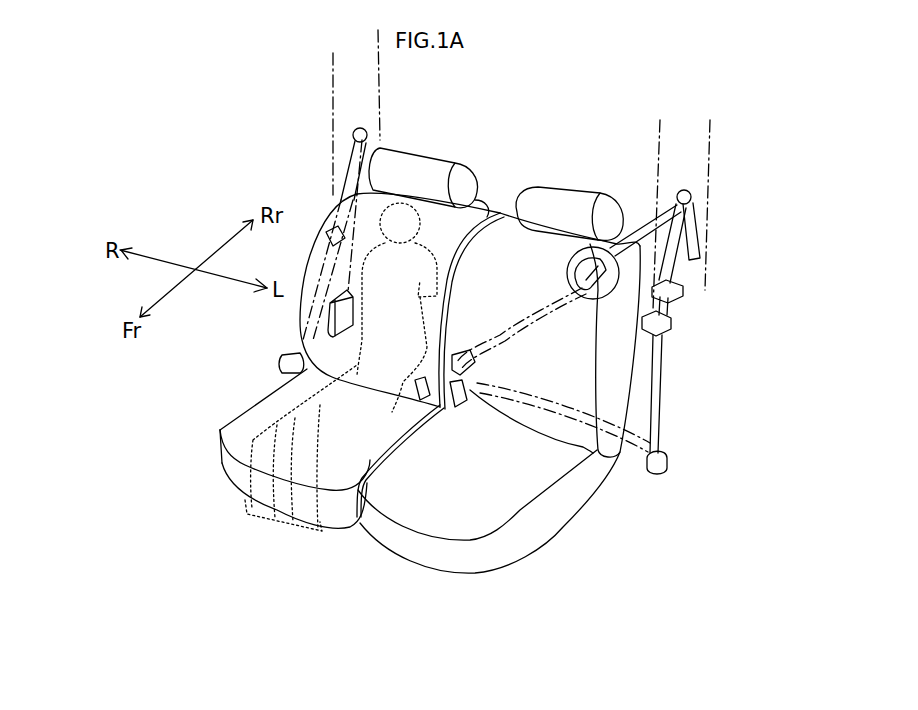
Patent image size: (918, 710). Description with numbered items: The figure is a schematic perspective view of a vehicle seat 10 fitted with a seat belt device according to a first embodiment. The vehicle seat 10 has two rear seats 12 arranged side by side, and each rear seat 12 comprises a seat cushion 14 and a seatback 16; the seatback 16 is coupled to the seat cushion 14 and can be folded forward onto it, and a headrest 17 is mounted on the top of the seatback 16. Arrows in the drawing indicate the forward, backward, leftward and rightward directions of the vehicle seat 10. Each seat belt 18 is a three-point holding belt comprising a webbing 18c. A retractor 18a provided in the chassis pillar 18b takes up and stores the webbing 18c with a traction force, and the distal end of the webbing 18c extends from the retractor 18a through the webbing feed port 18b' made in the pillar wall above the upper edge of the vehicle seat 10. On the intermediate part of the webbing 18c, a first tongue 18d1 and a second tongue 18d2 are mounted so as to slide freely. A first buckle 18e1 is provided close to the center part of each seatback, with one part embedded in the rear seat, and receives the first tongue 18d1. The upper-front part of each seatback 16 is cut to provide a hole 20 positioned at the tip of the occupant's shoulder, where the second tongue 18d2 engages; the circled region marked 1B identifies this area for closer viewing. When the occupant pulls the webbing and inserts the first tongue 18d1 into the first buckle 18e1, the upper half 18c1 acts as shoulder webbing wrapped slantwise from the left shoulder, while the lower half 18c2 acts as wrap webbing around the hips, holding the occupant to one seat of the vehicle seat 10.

The vehicle seat 10 is at (203, 412).
The rear seat 12 is at (246, 524).
The seat cushion 14 is at (267, 413).
The seatback 16 is at (360, 345).
The headrest 17 is at (437, 165).
The seat belt 18 is at (320, 204).
The retractor 18a is at (330, 323).
The chassis pillar 18b is at (518, 148).
The webbing feed port 18b' is at (573, 169).
The webbing 18c is at (343, 172).
The upper half of the webbing 18c1 is at (520, 320).
The lower half of the webbing 18c2 is at (645, 415).
The first tongue 18d1 is at (663, 327).
The second tongue 18d2 is at (678, 302).
The first buckle 18e1 is at (415, 398).
The hole 20 is at (550, 350).
The detail region 1B is at (567, 263).